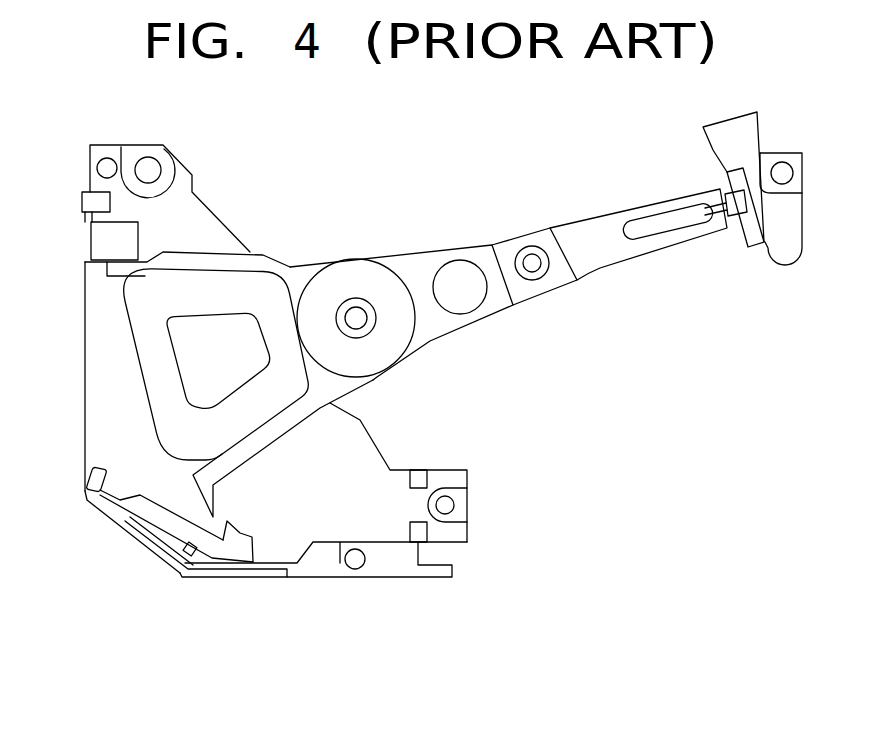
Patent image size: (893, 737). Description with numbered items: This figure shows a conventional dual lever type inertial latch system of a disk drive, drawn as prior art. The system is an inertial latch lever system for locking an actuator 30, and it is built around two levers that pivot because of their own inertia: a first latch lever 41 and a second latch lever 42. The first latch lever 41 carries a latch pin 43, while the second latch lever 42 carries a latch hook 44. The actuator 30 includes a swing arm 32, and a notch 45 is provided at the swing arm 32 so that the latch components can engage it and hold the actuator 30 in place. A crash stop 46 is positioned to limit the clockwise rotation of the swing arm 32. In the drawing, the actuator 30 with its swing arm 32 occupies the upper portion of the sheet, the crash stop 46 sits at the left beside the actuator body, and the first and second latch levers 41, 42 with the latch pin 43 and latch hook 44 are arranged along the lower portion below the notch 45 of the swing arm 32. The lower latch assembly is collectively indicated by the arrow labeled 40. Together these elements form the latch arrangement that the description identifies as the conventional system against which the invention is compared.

The actuator 30 is at (477, 222).
The swing arm 32 is at (455, 330).
The base unit 40 is at (248, 597).
The first latch lever 41 is at (398, 572).
The second latch lever 42 is at (103, 493).
The latch pin 43 is at (180, 577).
The latch hook 44 is at (229, 528).
The notch 45 is at (243, 485).
The crash stop 46 is at (101, 241).